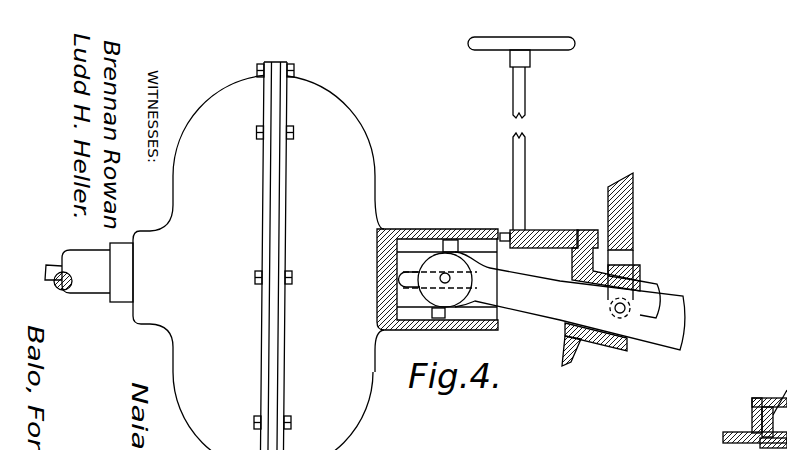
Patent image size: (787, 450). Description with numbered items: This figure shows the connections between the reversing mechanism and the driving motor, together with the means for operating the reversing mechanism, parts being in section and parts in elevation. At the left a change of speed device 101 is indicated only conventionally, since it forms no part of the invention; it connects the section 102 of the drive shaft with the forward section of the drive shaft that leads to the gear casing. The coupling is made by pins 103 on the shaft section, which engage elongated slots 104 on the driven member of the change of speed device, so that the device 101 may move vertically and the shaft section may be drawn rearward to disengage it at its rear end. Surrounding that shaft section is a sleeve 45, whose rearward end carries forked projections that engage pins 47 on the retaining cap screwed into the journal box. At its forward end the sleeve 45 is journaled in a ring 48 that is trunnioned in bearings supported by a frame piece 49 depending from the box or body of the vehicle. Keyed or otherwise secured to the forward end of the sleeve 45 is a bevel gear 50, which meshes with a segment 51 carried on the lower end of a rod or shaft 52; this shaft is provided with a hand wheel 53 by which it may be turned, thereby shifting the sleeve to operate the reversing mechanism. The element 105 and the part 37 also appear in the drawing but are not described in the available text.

The change of speed device 101 is at (338, 180).
The section of the drive shaft 102 is at (90, 285).
The pins 103 is at (452, 280).
The elongated slots 104 is at (411, 275).
The valve key block 105 is at (452, 241).
The sleeve 45 is at (682, 337).
The pins 47 is at (643, 302).
The ring 48 is at (634, 271).
The frame piece 49 is at (634, 227).
The bevel gear 50 is at (572, 357).
The segment 51 is at (580, 231).
The rod or shaft 52 is at (516, 183).
The hand wheel 53 is at (503, 46).
The flange 37 is at (722, 443).